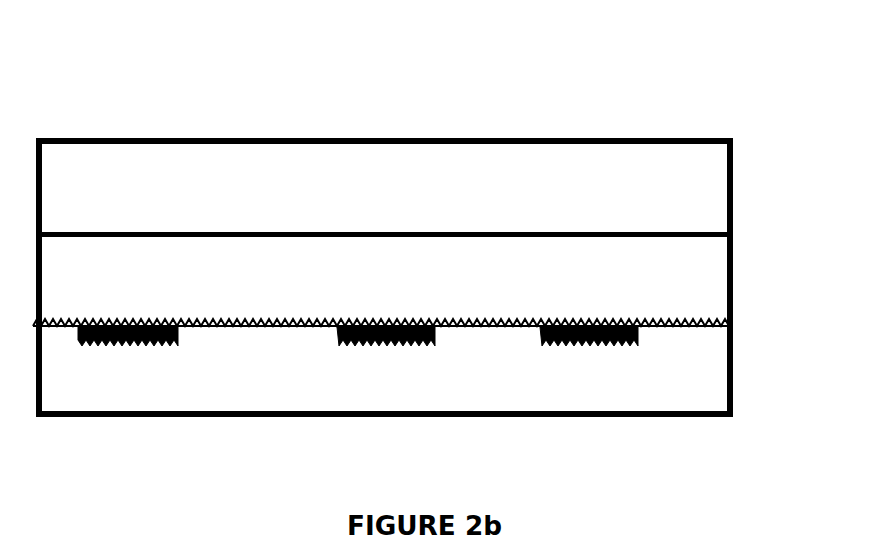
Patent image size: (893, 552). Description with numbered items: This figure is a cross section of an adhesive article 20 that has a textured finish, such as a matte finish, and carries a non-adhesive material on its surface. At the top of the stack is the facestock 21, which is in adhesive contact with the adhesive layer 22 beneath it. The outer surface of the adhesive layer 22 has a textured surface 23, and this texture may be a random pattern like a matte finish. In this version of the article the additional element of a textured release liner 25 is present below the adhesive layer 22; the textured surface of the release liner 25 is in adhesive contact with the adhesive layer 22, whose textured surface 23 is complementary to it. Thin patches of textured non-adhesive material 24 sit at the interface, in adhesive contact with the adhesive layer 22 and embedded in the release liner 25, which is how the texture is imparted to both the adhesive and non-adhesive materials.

The article 20 is at (136, 108).
The facestock 21 is at (733, 187).
The adhesive layer 22 is at (733, 278).
The textured surface 23 is at (500, 325).
The textured non-adhesive material 24 is at (627, 347).
The textured release liner 25 is at (733, 366).